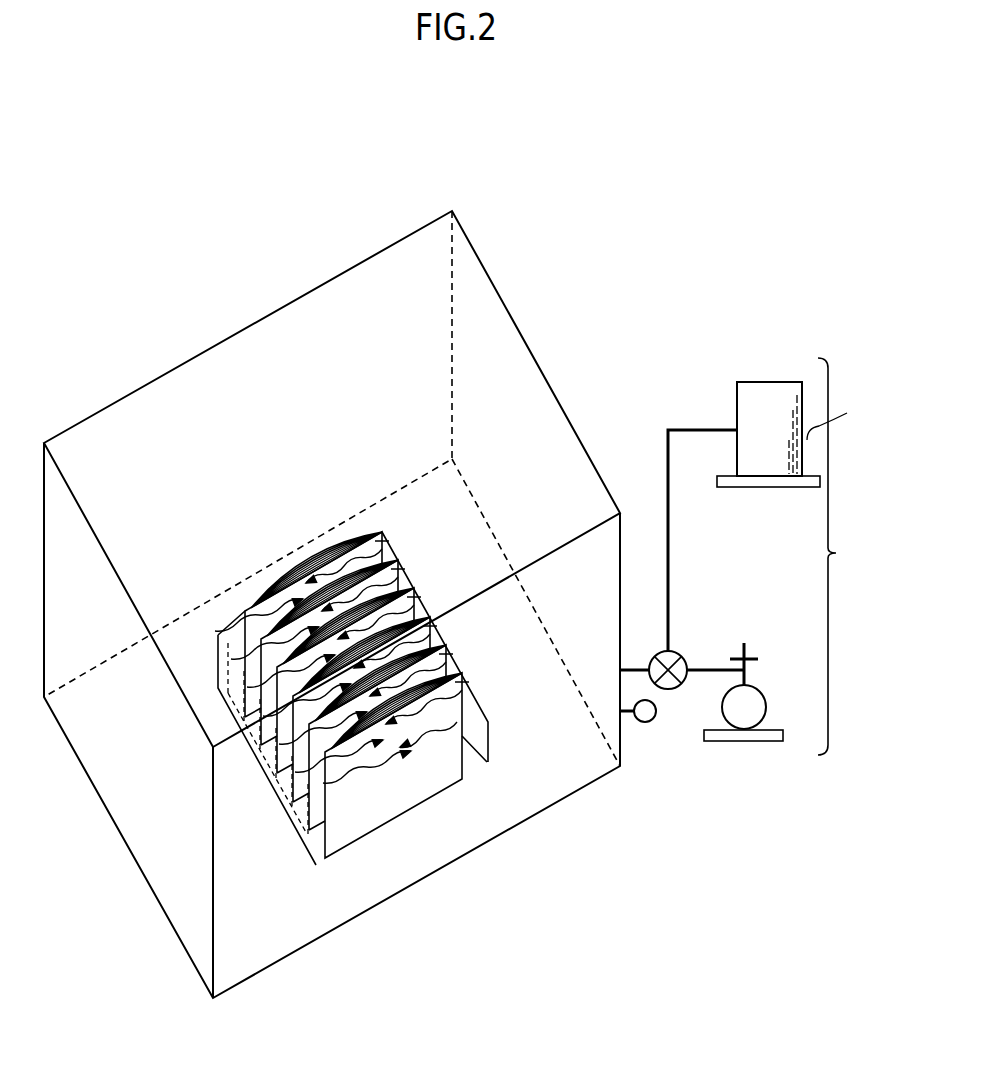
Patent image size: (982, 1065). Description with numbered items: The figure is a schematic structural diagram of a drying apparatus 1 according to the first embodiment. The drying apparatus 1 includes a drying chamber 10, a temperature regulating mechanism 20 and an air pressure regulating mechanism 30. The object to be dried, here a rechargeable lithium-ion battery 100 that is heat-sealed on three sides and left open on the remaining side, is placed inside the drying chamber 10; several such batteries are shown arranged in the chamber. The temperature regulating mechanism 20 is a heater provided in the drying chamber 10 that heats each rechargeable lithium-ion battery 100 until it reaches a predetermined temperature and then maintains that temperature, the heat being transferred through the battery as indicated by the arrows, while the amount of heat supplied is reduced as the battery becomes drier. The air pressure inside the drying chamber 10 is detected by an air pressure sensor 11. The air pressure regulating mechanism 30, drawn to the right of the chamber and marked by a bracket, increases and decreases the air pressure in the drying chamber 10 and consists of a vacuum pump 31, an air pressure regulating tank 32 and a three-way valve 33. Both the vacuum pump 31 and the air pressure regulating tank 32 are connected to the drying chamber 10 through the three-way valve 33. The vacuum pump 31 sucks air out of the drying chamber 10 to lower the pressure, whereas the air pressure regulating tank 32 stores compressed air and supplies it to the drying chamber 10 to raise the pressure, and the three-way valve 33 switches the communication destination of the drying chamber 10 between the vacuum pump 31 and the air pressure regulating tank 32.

The drying apparatus 1 is at (123, 228).
The drying chamber 10 is at (513, 343).
The air pressure sensor 11 is at (648, 723).
The temperature regulating mechanism 20 is at (307, 840).
The air pressure regulating mechanism 30 is at (743, 543).
The vacuum pump 31 is at (764, 692).
The air pressure regulating tank 32 is at (774, 392).
The three-way valve 33 is at (683, 655).
The rechargeable lithium-ion battery 100 is at (382, 533).